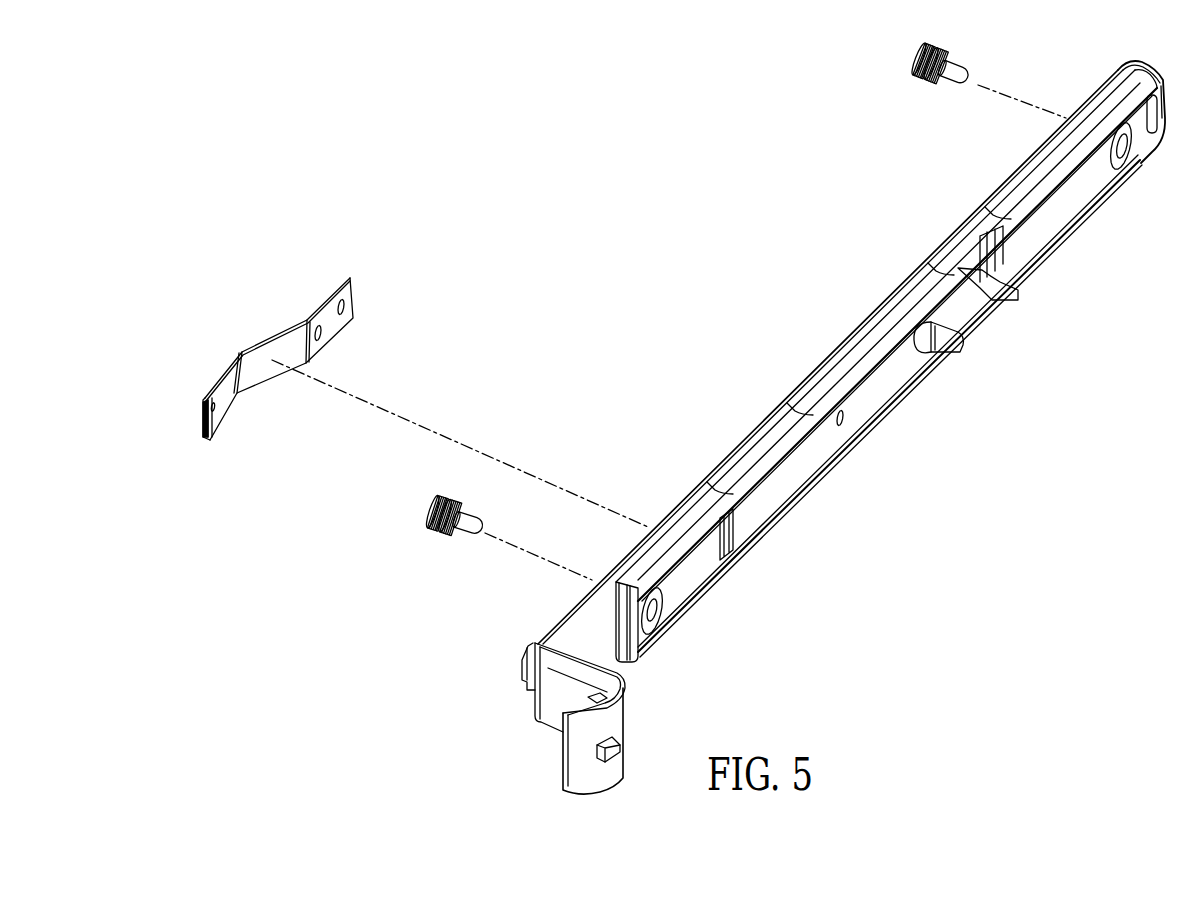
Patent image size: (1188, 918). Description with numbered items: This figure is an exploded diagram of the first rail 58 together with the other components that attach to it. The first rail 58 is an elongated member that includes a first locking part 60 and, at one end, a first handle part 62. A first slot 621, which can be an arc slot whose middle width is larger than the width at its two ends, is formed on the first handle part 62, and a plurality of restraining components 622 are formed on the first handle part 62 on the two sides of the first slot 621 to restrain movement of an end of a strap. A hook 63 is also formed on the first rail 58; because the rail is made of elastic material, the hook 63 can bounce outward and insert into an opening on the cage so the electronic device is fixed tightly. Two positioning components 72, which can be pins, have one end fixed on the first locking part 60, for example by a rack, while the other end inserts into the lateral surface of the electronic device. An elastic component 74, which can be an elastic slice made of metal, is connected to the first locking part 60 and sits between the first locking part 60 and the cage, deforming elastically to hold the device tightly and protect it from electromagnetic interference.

The first rail 58 is at (798, 427).
The first locking part 60 is at (711, 589).
The first handle part 62 is at (616, 691).
The hook 63 is at (530, 653).
The first slot 621 is at (620, 745).
The restraining components 622 is at (593, 697).
The positioning component 72 is at (933, 85).
The elastic component 74 is at (276, 332).